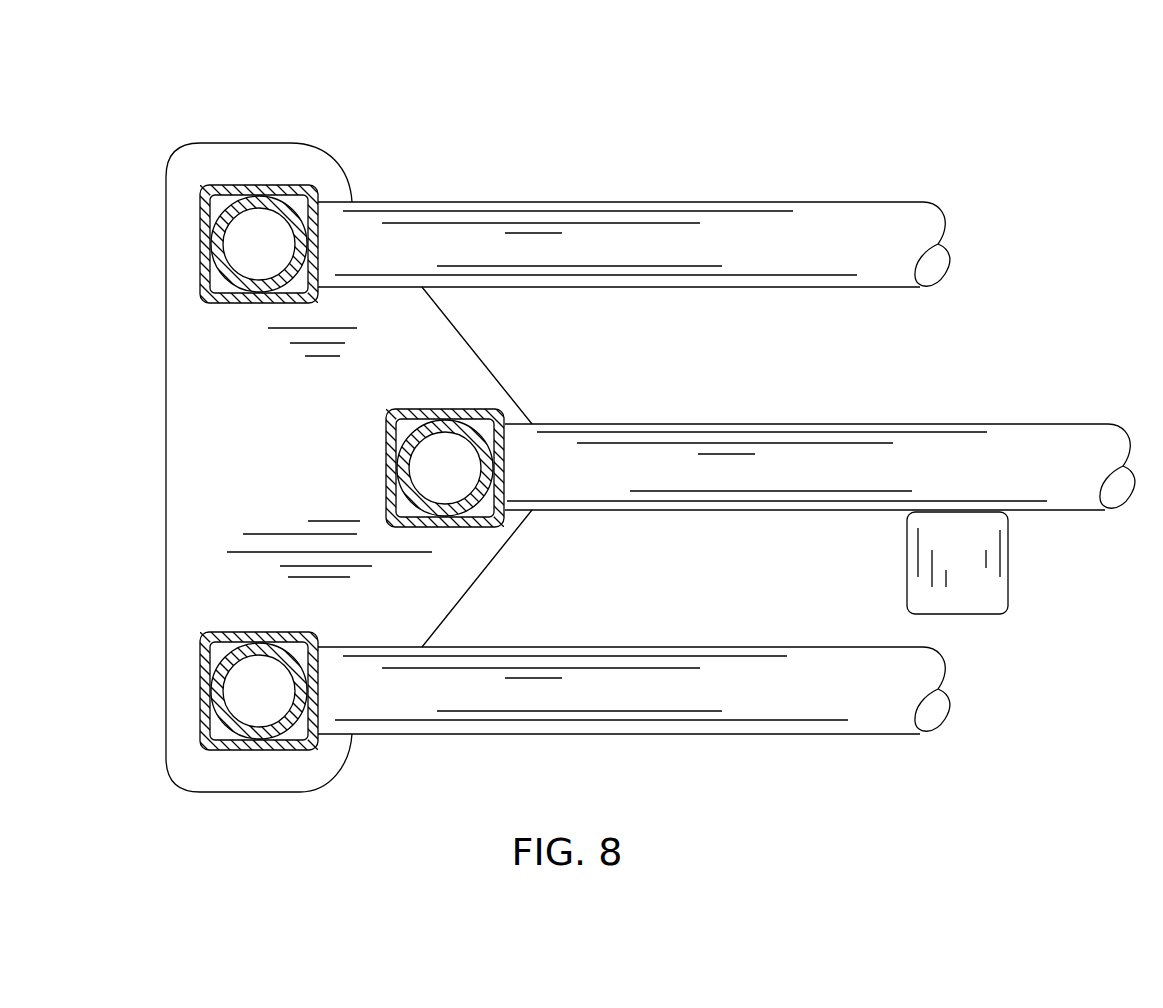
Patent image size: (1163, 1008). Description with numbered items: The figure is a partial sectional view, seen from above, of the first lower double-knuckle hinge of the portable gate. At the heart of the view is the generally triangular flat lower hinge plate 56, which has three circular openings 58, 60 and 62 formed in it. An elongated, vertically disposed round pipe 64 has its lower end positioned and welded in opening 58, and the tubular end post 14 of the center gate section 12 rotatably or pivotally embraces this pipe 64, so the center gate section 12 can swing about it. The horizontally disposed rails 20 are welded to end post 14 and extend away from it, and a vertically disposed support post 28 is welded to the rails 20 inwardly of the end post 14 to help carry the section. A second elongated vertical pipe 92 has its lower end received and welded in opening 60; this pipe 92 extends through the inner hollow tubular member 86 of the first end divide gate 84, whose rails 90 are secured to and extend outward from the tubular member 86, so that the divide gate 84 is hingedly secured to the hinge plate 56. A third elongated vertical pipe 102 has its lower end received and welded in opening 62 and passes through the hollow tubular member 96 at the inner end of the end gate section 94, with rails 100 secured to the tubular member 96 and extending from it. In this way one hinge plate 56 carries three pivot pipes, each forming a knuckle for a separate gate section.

The center gate section 12 is at (1000, 408).
The tubular end post 14 is at (478, 410).
The rails 20 is at (803, 465).
The support post 28 is at (985, 597).
The lower hinge plate 56 is at (224, 458).
The circular opening 58 is at (483, 501).
The circular opening 60 is at (228, 230).
The circular opening 62 is at (293, 727).
The round pipe 64 is at (450, 438).
The first end divide gate 84 is at (684, 184).
The inner tubular member 86 is at (247, 297).
The rails 90 is at (832, 218).
The pipe 92 is at (222, 222).
The end gate section 94 is at (585, 749).
The tubular member 96 is at (245, 632).
The rails 100 is at (737, 705).
The pipe 102 is at (240, 728).